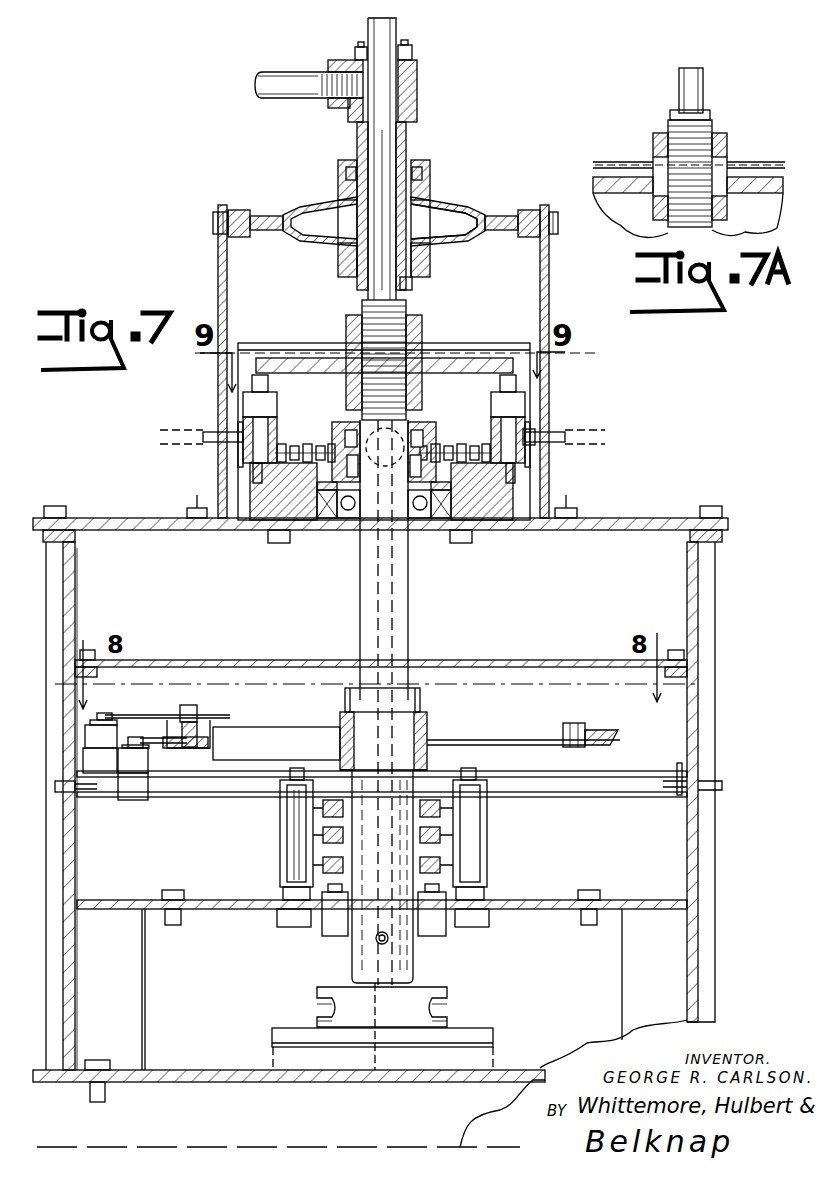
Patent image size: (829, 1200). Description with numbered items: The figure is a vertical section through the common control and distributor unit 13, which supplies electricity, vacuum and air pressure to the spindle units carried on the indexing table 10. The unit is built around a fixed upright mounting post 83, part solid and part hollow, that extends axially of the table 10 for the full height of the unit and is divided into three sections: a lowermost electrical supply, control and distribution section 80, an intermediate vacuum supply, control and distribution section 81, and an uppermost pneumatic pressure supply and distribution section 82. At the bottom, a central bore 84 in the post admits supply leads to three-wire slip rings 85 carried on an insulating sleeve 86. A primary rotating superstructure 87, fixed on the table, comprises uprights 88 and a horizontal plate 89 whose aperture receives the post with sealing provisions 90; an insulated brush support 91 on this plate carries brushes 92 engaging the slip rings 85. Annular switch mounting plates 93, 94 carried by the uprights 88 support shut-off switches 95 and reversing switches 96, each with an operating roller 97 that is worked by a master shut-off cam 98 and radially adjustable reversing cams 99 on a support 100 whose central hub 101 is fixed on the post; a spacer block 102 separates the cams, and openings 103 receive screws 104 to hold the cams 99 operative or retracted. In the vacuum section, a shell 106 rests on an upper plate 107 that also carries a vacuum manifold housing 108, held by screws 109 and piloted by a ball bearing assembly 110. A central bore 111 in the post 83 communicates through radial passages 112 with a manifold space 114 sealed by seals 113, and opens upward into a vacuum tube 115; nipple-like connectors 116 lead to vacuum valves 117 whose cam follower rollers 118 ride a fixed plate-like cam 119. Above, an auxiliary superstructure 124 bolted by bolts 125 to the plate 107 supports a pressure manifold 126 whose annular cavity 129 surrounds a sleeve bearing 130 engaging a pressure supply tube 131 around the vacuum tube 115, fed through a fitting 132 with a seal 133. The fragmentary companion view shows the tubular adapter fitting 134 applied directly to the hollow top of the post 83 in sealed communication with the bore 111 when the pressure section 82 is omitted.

In FIG. 7, the indexing table 10 is at (150, 1130).
In FIG. 7, the common control and distributor unit 13 is at (557, 468).
In FIG. 7, the electrical supply, control and distribution section 80 is at (466, 729).
In FIG. 7, the vacuum supply, control and distribution section 81 is at (536, 395).
In FIG. 7, the pneumatic pressure supply and distribution section 82 is at (496, 210).
In FIG. 7, the mounting post 83 is at (362, 310).
In FIG. 7A, the mounting post 83 is at (712, 125).
In FIG. 7, the central bore 84 is at (430, 745).
In FIG. 7, the slip rings 85 is at (441, 806).
In FIG. 7, the insulating sleeve 86 is at (356, 830).
In FIG. 7, the primary rotating superstructure 87 is at (47, 916).
In FIG. 7, the uprights 88 is at (130, 971).
In FIG. 7, the horizontal plate 89 is at (225, 912).
In FIG. 7, the sealing provisions 90 is at (340, 936).
In FIG. 7, the brush support 91 is at (281, 822).
In FIG. 7, the brushes 92 is at (300, 848).
In FIG. 7, the upper switch mounting plate 93 is at (100, 780).
In FIG. 7, the lower switch mounting plate 94 is at (140, 798).
In FIG. 7, the shut-off switches 95 is at (90, 765).
In FIG. 7, the reversing switches 96 is at (150, 785).
In FIG. 7, the operating roller 97 is at (105, 713).
In FIG. 7, the master shut-off cam 98 is at (160, 707).
In FIG. 7, the reversing cams 99 is at (400, 749).
In FIG. 7, the cam support 100 is at (260, 727).
In FIG. 7, the central hub 101 is at (427, 720).
In FIG. 7, the spacer block 102 is at (200, 738).
In FIG. 7, the inner and outer openings 103 is at (188, 705).
In FIG. 7, the screws 104 is at (214, 742).
In FIG. 7, the shell 106 is at (438, 348).
In FIG. 7A, the shell 106 is at (770, 162).
In FIG. 7, the upper plate 107 is at (620, 518).
In FIG. 7, the vacuum manifold housing 108 is at (440, 521).
In FIG. 7, the screws 109 is at (280, 541).
In FIG. 7, the ball bearing assembly 110 is at (333, 521).
In FIG. 7, the central bore 111 is at (400, 428).
In FIG. 7A, the central bore 111 is at (727, 141).
In FIG. 7, the radial passages 112 is at (384, 510).
In FIG. 7, the seals 113 is at (342, 455).
In FIG. 7, the manifold space 114 is at (425, 446).
In FIG. 7, the vacuum tube 115 is at (398, 142).
In FIG. 7, the nipple-like connectors 116 is at (300, 449).
In FIG. 7, the vacuum valve 117 is at (243, 455).
In FIG. 7, the cam follower roller 118 is at (250, 383).
In FIG. 7, the plate-like cam 119 is at (335, 374).
In FIG. 7A, the plate-like cam 119 is at (766, 193).
In FIG. 7, the auxiliary superstructure 124 is at (549, 262).
In FIG. 7, the bolts 125 is at (198, 506).
In FIG. 7, the pressure manifold 126 is at (432, 247).
In FIG. 7, the annular cavity 129 is at (430, 210).
In FIG. 7, the sleeve bearing 130 is at (418, 182).
In FIG. 7, the pressure supply tube 131 is at (357, 140).
In FIG. 7, the fitting 132 is at (338, 60).
In FIG. 7, the seal 133 is at (410, 58).
In FIG. 7A, the tubular adapter fitting 134 is at (705, 88).